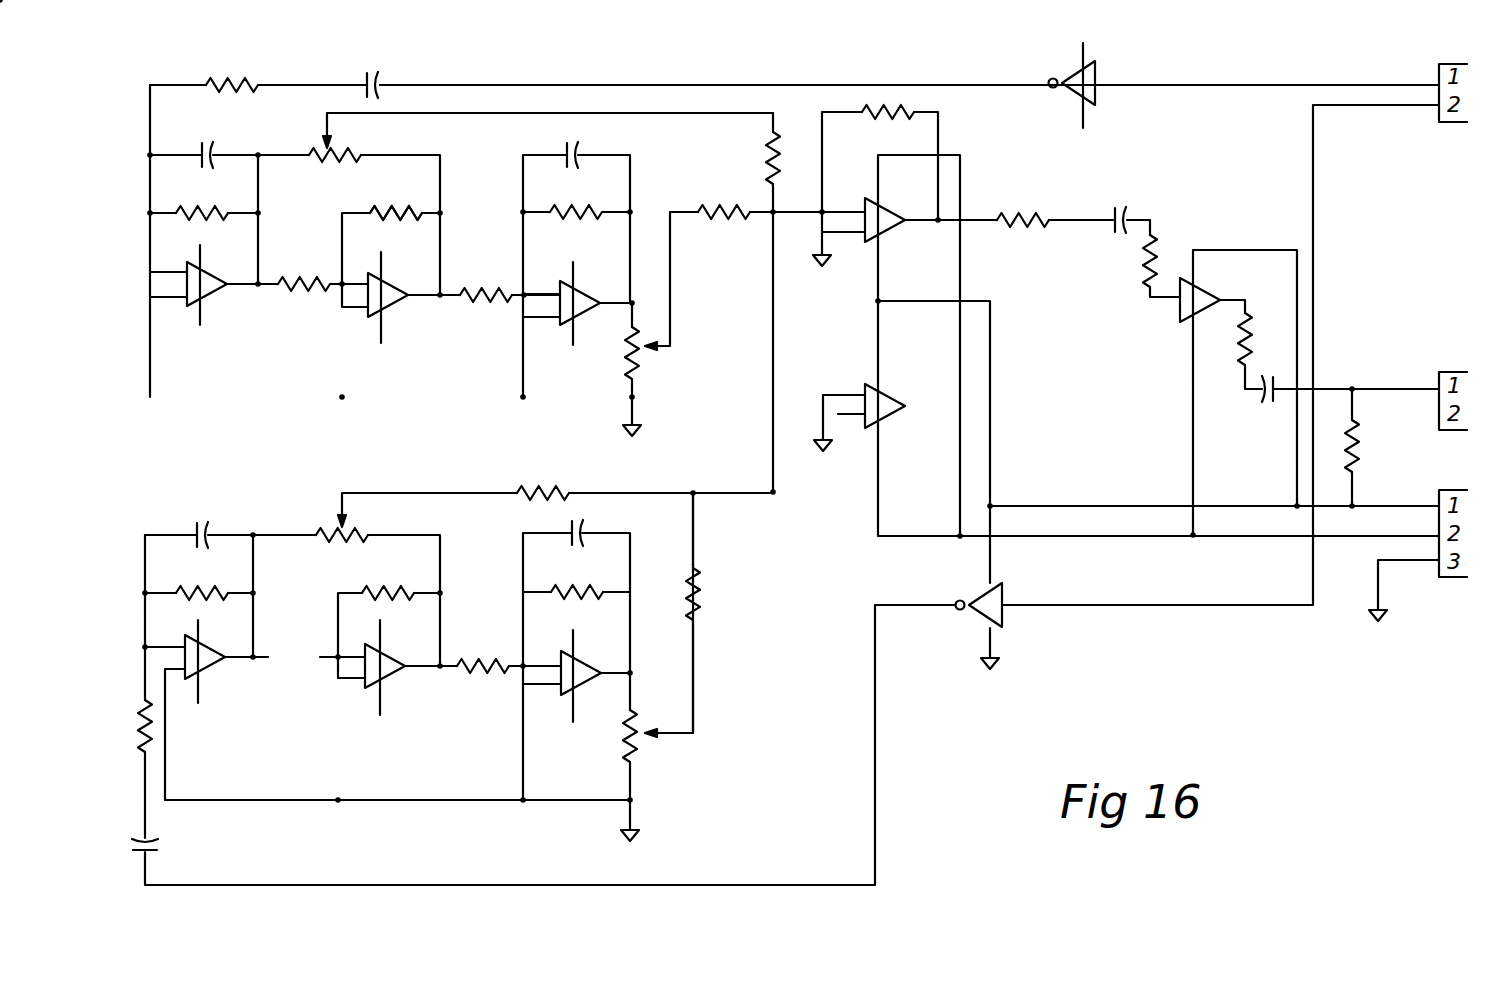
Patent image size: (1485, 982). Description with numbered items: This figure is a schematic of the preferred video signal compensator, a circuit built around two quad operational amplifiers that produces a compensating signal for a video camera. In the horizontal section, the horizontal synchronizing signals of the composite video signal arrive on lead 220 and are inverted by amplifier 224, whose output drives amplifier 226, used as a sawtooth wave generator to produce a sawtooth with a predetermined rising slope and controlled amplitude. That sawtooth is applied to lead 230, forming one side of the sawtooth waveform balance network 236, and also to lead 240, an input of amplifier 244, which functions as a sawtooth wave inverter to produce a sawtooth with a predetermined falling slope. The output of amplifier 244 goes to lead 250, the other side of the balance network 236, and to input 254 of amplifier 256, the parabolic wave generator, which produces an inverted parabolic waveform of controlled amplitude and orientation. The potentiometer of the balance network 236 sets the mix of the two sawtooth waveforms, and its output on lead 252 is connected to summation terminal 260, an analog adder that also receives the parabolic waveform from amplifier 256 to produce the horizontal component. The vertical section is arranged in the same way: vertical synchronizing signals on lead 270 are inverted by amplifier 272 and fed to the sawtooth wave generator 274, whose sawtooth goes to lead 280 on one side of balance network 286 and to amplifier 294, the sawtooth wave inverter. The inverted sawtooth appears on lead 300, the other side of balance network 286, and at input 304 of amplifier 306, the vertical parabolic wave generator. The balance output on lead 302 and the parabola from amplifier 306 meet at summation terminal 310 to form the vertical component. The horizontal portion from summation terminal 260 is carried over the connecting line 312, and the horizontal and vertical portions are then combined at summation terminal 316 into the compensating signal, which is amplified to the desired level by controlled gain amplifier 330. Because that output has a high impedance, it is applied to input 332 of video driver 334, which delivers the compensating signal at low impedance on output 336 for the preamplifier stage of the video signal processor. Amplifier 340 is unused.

The lead 220 is at (713, 83).
The amplifier 224 is at (1073, 112).
The sawtooth wave generator 226 is at (212, 307).
The lead 230 is at (292, 160).
The sawtooth waveform balance network 236 is at (345, 152).
The lead 240 is at (350, 286).
The amplifier 244 is at (388, 308).
The lead 250 is at (389, 158).
The lead 252 is at (503, 118).
The input 254 is at (534, 297).
The amplifier 256 is at (582, 318).
The summation terminal 260 is at (768, 220).
The lead 270 is at (1215, 605).
The amplifier 272 is at (978, 612).
The sawtooth wave generator 274 is at (212, 668).
The lead 280 is at (292, 538).
The sawtooth waveform balance network 286 is at (372, 533).
The amplifier 294 is at (388, 680).
The lead 300 is at (400, 538).
The lead 302 is at (448, 492).
The input 304 is at (518, 680).
The amplifier 306 is at (582, 688).
The summation terminal 310 is at (695, 495).
The line 312 is at (773, 353).
The summation terminal 316 is at (798, 212).
The controlled gain amplifier 330 is at (895, 228).
The input 332 is at (1090, 222).
The video driver 334 is at (1210, 290).
The output 336 is at (1335, 388).
The amplifier 340 is at (890, 412).